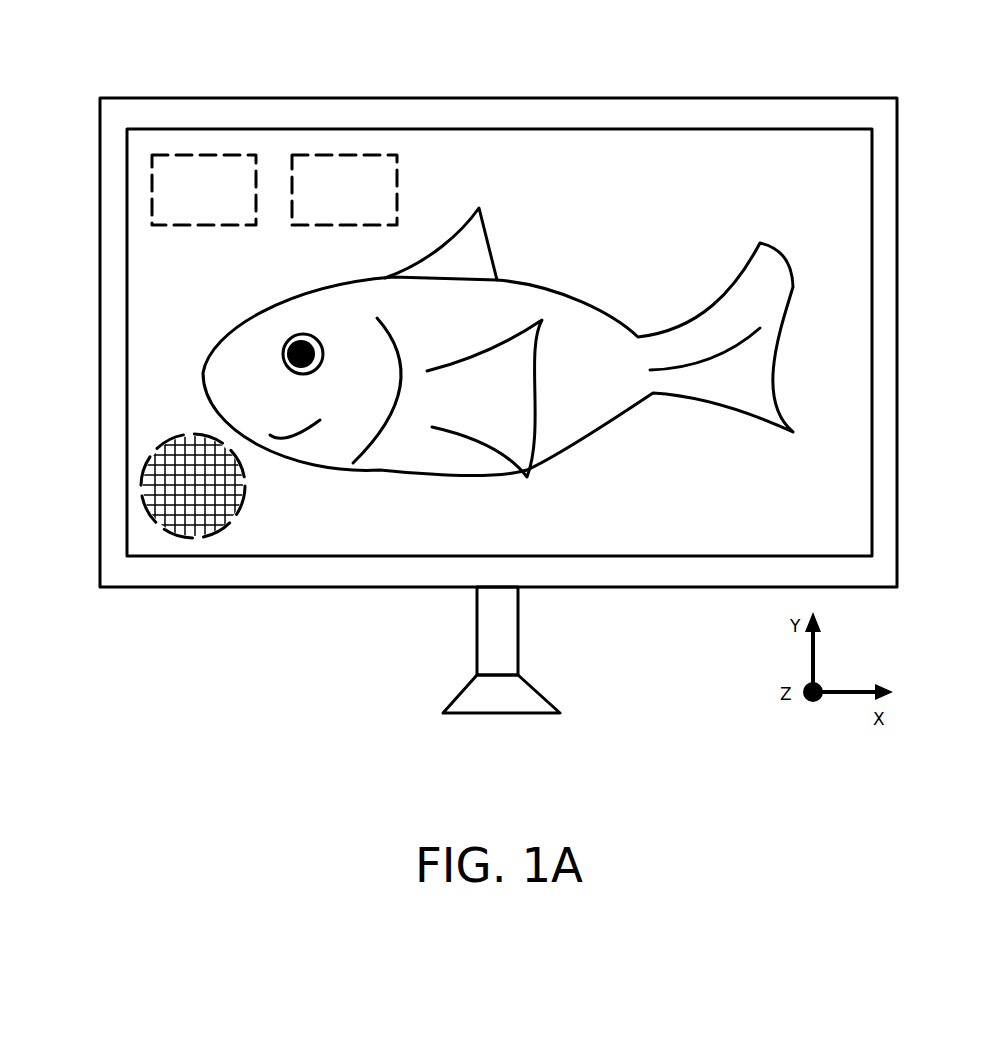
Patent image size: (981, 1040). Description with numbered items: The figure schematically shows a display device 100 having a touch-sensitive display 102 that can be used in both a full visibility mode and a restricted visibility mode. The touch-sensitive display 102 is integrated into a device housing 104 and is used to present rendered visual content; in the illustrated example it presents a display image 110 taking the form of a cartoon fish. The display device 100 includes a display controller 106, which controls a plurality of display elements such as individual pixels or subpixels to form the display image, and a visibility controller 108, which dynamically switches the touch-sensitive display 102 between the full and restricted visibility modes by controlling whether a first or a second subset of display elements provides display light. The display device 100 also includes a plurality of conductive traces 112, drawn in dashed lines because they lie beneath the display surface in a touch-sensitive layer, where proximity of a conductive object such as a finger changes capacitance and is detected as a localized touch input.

The display device 100 is at (139, 49).
The touch-sensitive display 102 is at (793, 129).
The device housing 104 is at (99, 137).
The display controller 106 is at (204, 190).
The visibility controller 108 is at (344, 190).
The display image 110 is at (247, 317).
The conductive traces 112 is at (233, 512).